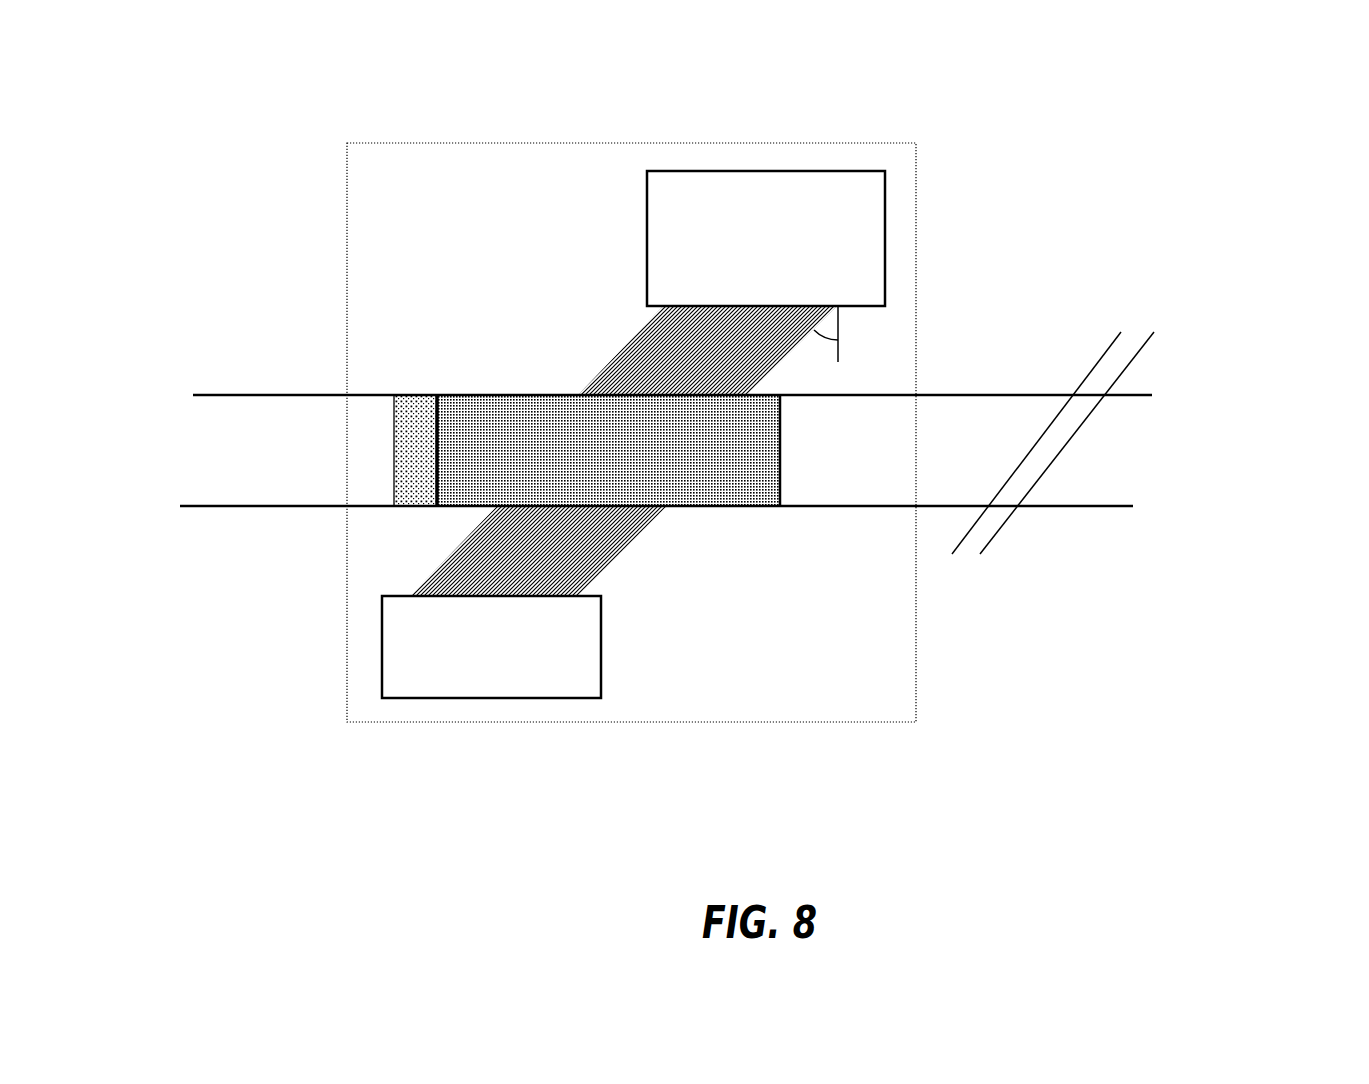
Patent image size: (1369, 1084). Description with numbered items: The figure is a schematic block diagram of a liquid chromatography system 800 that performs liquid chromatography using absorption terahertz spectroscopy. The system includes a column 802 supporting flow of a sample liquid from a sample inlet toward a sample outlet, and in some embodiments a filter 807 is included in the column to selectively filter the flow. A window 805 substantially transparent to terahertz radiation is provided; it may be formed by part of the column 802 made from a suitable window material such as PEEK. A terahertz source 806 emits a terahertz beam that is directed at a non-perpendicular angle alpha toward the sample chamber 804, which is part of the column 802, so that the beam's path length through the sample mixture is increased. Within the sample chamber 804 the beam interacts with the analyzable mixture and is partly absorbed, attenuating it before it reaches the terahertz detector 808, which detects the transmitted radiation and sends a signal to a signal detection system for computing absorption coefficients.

The liquid chromatography system 800 is at (1076, 94).
The column 802 is at (300, 395).
The sample chamber 804 is at (770, 506).
The window 805 is at (617, 508).
The terahertz source 806 is at (382, 677).
The filter 807 is at (425, 394).
The terahertz detector 808 is at (782, 171).